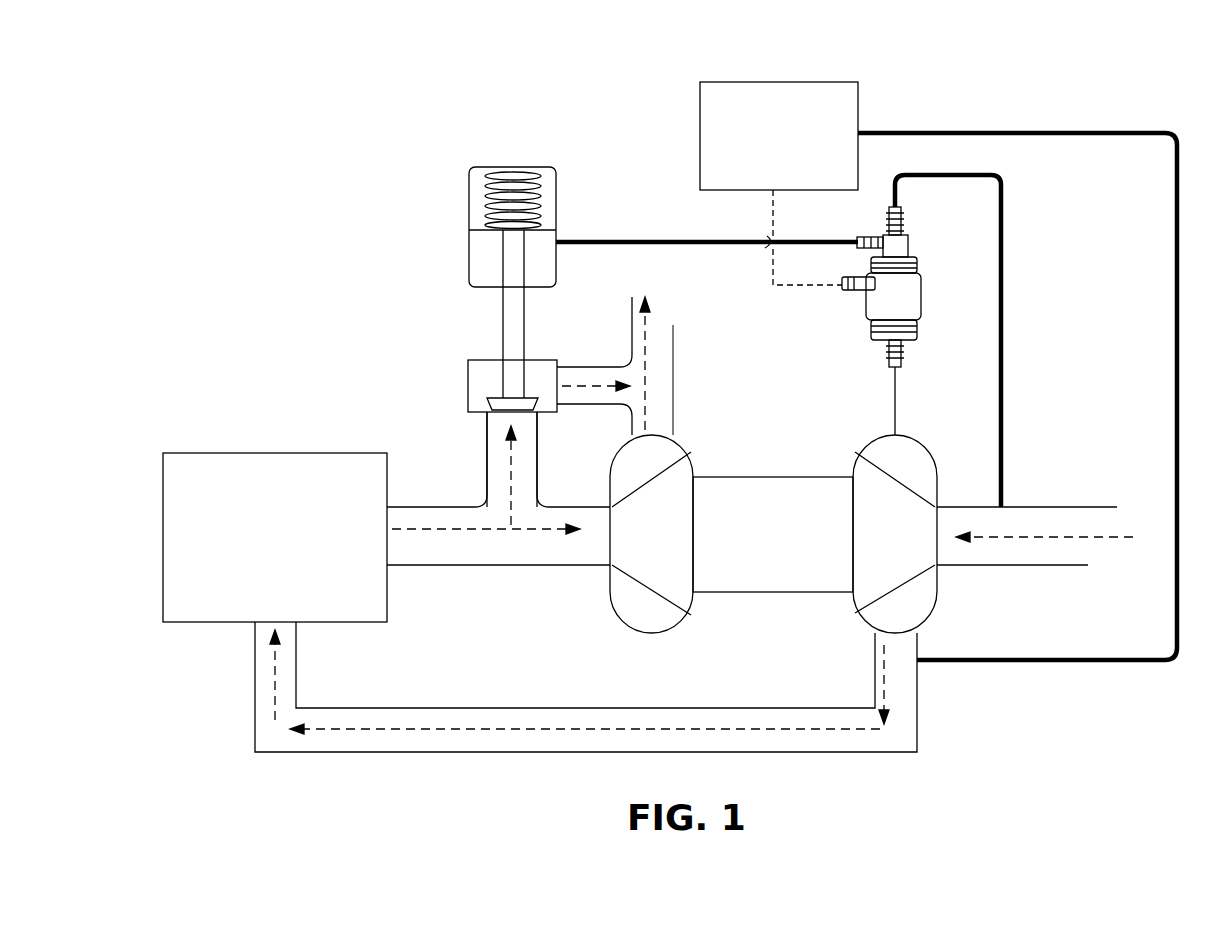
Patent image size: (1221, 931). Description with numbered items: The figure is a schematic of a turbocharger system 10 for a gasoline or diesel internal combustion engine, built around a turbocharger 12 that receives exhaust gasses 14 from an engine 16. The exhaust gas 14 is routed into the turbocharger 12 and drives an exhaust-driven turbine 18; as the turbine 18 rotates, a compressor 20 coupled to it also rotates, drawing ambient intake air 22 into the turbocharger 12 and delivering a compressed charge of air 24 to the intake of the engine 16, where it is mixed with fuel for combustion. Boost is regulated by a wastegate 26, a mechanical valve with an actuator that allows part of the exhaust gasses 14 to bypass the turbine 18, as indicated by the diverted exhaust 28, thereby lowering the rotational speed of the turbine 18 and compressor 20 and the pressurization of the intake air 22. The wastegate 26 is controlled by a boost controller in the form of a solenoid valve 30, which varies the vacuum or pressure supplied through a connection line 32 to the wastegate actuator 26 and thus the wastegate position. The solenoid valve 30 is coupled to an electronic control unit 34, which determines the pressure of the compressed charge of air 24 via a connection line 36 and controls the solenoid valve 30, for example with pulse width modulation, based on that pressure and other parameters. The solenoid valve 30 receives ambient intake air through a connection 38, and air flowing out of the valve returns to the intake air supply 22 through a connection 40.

The turbocharger system 10 is at (238, 135).
The turbocharger 12 is at (720, 531).
The exhaust gasses 14 is at (460, 540).
The engine 16 is at (275, 487).
The turbine 18 is at (640, 543).
The compressor 20 is at (900, 545).
The ambient intake air 22 is at (1060, 540).
The compressed charge of air 24 is at (898, 695).
The wastegate 26 is at (483, 252).
The diverted exhaust gas 28 is at (512, 473).
The solenoid valve 30 is at (852, 305).
The connection line 32 is at (668, 240).
The electronic control unit 34 is at (728, 115).
The connection line 36 is at (1038, 130).
The connection 38 is at (897, 400).
The connection 40 is at (1002, 272).